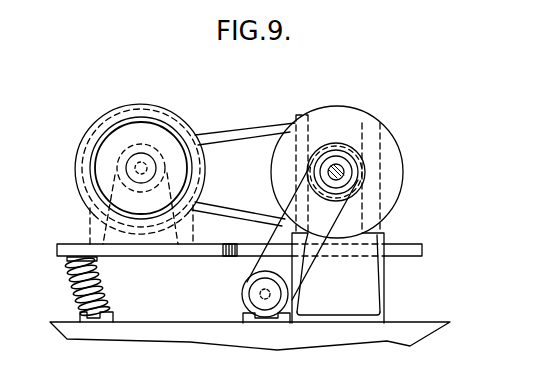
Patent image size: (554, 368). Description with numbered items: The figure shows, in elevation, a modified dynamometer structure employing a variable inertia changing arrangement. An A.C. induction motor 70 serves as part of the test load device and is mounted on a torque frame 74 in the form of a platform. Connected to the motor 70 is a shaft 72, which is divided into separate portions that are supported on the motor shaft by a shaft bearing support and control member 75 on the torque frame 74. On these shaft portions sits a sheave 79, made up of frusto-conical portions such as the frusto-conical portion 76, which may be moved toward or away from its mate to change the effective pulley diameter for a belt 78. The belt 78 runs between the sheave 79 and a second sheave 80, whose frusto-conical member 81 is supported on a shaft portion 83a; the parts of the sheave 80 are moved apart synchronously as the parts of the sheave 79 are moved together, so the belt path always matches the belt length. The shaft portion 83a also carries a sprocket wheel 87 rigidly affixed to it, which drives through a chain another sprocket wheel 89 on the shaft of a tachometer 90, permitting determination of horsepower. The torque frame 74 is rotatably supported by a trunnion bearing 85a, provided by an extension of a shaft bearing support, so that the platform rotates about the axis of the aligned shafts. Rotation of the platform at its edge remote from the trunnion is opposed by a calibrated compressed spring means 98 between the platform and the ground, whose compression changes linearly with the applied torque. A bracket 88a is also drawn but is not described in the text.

The A.C. induction motor 70 is at (115, 140).
The shaft 72 is at (133, 168).
The torque frame 74 is at (422, 247).
The shaft bearing support and control member 75 is at (87, 218).
The frusto-conical portion 76 is at (168, 110).
The belt 78 is at (240, 127).
The sheave 79 is at (121, 152).
The sheave 80 is at (360, 156).
The frusto-conical member 81 is at (395, 143).
The shaft portion 83a is at (336, 172).
The trunnion bearing 85a is at (307, 160).
The sprocket wheel 87 is at (330, 144).
The belt bracket 88a is at (300, 231).
The sprocket wheel 89 is at (255, 263).
The tachometer 90 is at (257, 294).
The compressed spring means 98 is at (72, 291).